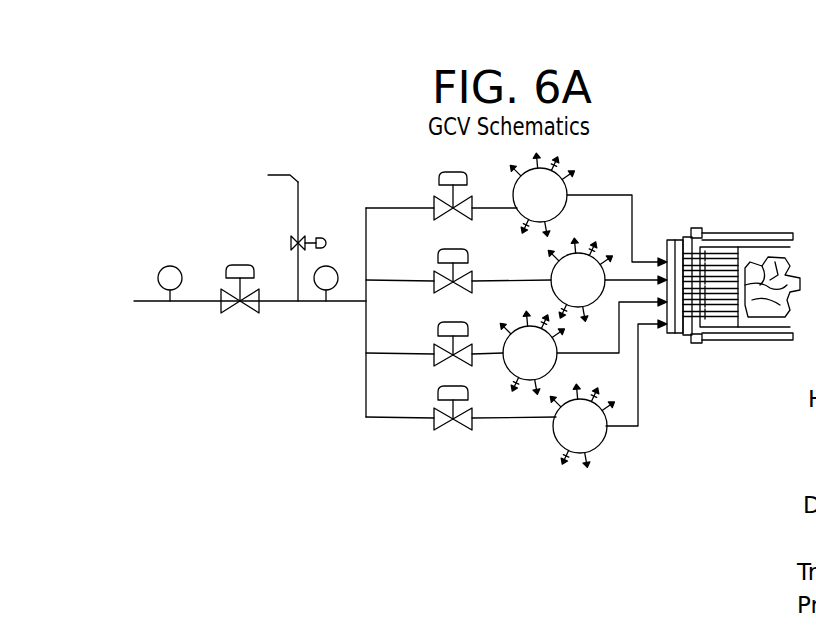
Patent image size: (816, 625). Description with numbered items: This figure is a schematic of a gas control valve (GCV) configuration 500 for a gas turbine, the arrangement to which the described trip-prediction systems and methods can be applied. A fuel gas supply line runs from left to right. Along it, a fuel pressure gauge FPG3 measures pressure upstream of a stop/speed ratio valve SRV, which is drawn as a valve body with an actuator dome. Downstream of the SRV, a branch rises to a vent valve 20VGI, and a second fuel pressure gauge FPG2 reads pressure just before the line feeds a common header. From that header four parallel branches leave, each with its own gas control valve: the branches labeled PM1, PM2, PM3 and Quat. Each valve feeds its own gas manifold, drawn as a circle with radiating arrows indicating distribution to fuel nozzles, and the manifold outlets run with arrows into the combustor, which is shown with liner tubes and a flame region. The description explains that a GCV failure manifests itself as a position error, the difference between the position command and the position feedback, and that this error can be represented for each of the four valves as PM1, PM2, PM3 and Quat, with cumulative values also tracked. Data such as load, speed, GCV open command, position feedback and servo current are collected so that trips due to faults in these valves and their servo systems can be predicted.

The GCV configuration 500 is at (332, 148).
The fuel pressure gauge 3 FPG3 is at (184, 303).
The stop/speed ratio valve SRV is at (218, 277).
The gas vent valve 20VGI is at (275, 238).
The fuel pressure gauge 2 FPG2 is at (330, 303).
The PM1 position error PM1 is at (564, 209).
The PM2 position error PM2 is at (516, 280).
The PM3 position error PM3 is at (516, 346).
The Quat position error Quat is at (584, 394).